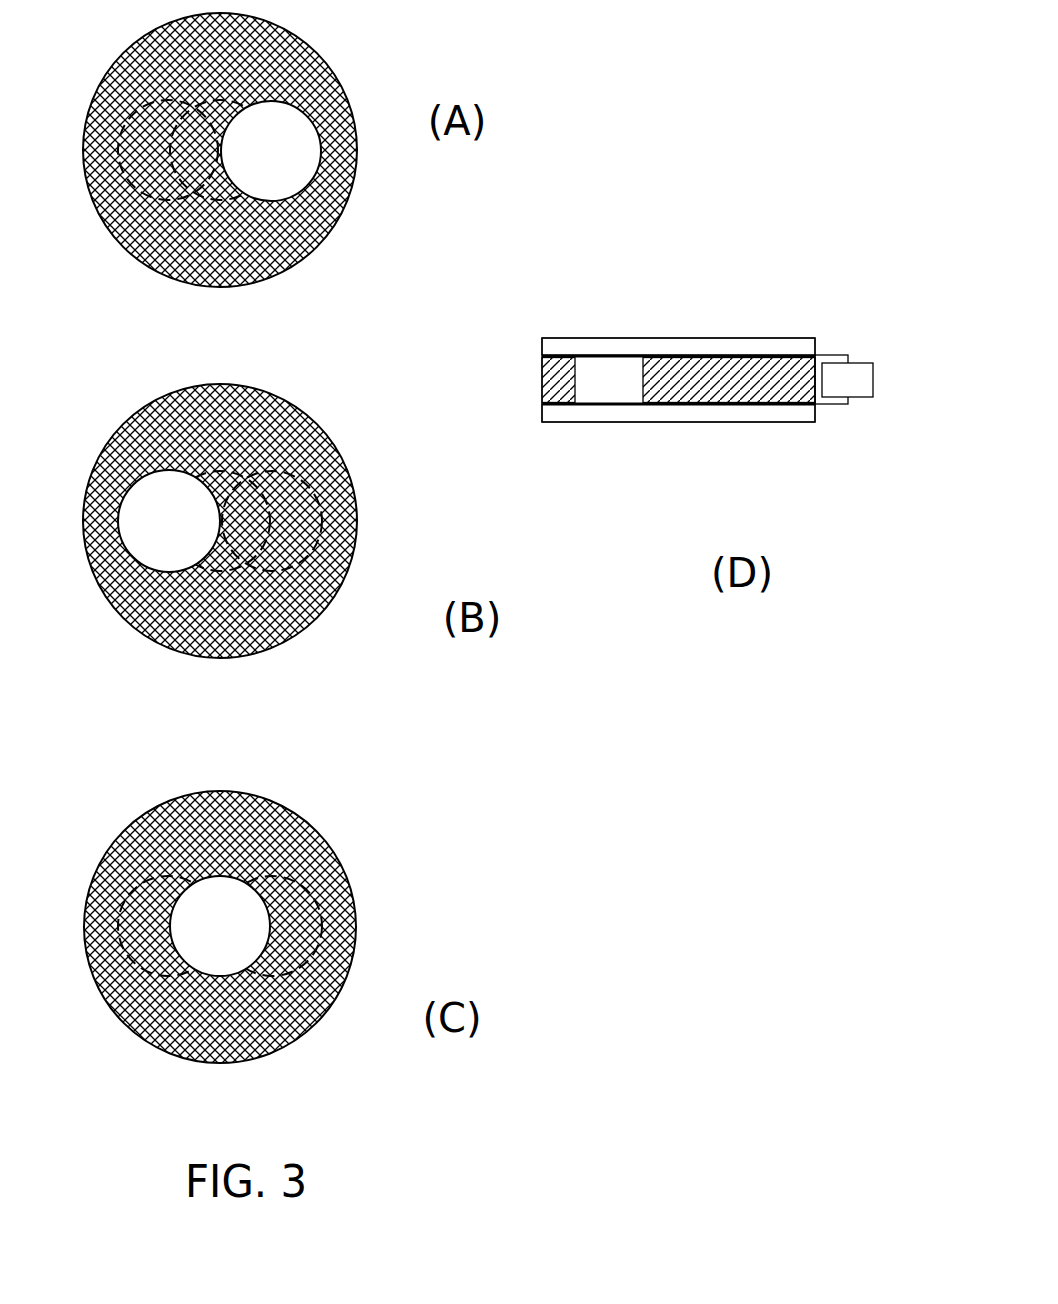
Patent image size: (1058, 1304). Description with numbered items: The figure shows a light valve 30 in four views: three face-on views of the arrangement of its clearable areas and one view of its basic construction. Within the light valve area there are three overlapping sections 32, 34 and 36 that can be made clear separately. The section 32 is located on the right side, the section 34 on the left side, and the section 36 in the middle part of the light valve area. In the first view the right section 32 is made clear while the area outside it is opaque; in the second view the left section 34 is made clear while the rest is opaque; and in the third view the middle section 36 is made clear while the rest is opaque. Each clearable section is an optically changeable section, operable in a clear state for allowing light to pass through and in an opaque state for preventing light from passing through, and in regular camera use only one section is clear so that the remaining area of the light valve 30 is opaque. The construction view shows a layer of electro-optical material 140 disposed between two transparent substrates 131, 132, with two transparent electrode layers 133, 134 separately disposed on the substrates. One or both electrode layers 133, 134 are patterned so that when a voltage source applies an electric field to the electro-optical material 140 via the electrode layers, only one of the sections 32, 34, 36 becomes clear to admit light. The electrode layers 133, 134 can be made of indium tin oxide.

The light valve 30 is at (307, 48).
The right clearable section 32 is at (303, 165).
The left clearable section 34 is at (113, 212).
The middle clearable section 36 is at (230, 200).
The transparent substrate 131 is at (705, 338).
The transparent substrate 132 is at (630, 422).
The transparent electrode layer 133 is at (732, 355).
The transparent electrode layer 134 is at (740, 406).
The electro-optical material 140 is at (707, 392).